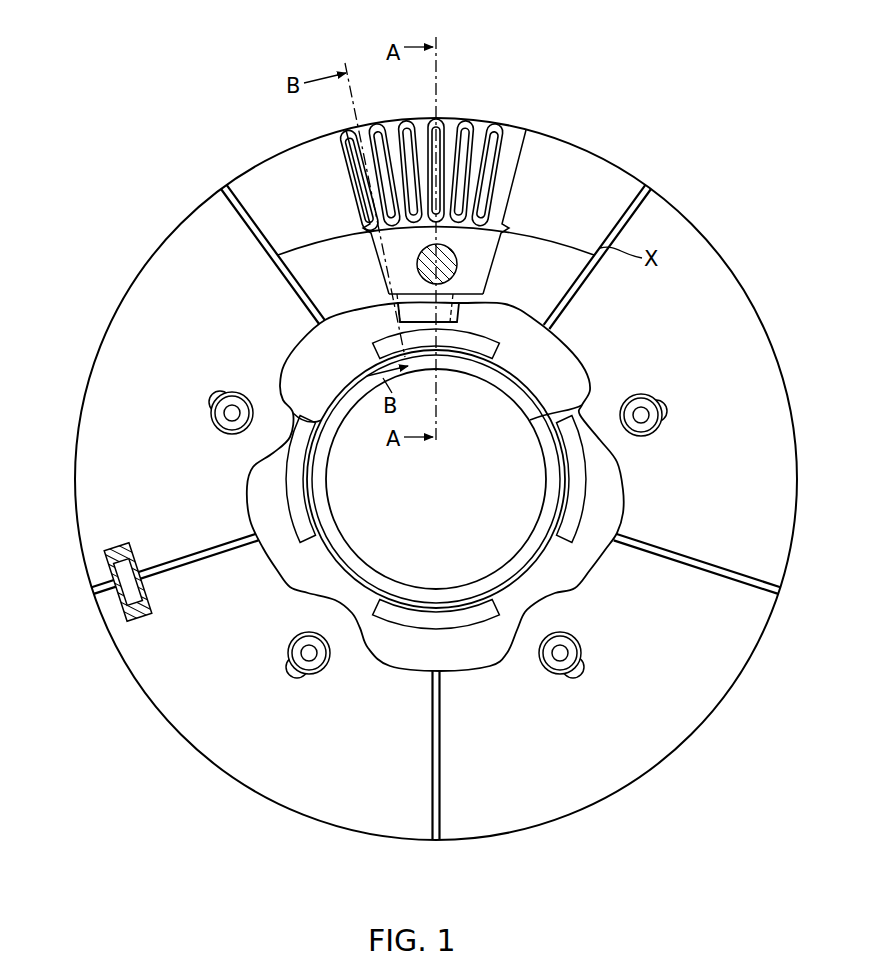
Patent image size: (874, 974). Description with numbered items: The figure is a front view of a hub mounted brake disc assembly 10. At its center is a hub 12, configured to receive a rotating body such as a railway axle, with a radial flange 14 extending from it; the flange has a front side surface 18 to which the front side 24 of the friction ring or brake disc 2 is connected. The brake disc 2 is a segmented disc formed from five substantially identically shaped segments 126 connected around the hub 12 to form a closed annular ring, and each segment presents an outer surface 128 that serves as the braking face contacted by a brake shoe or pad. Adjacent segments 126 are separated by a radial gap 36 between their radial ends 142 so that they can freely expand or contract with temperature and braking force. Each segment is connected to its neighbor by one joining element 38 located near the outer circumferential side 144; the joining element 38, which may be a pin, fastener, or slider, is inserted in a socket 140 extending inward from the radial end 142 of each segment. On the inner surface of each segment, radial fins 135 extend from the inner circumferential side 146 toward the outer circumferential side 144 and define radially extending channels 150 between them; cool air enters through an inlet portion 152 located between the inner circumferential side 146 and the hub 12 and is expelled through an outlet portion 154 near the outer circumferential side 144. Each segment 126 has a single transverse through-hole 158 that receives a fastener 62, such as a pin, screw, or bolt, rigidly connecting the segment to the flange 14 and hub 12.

The brake disc assembly 10 is at (772, 31).
The brake disc 2 is at (737, 249).
The front side 24 is at (660, 781).
The hub 12 is at (592, 393).
The radial flange 14 is at (484, 238).
The front side surface 18 is at (487, 268).
The radial gap 36 is at (232, 197).
The joining element 38 is at (146, 592).
The fastener 62 is at (440, 327).
The segment 126 is at (275, 176).
The outer surface 128 is at (357, 256).
The radial fin 135 is at (376, 138).
The socket 140 is at (125, 551).
The radial end 142 is at (262, 245).
The outer circumferential side 144 is at (348, 127).
The inner circumferential side 146 is at (358, 313).
The channel 150 is at (482, 137).
The inlet portion 152 is at (478, 335).
The outlet portion 154 is at (450, 133).
The transverse through-hole 158 is at (470, 251).